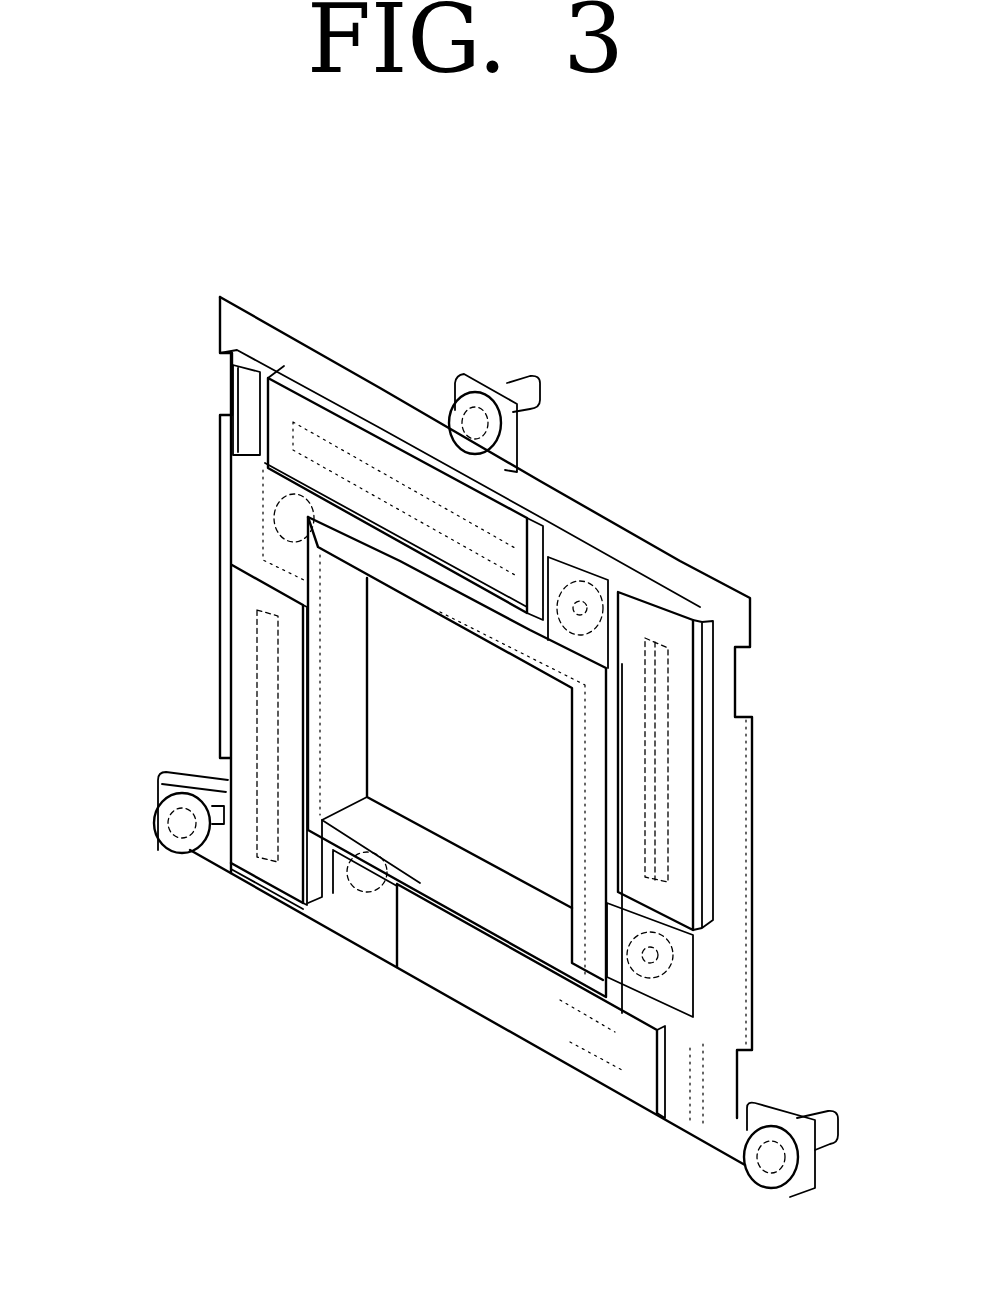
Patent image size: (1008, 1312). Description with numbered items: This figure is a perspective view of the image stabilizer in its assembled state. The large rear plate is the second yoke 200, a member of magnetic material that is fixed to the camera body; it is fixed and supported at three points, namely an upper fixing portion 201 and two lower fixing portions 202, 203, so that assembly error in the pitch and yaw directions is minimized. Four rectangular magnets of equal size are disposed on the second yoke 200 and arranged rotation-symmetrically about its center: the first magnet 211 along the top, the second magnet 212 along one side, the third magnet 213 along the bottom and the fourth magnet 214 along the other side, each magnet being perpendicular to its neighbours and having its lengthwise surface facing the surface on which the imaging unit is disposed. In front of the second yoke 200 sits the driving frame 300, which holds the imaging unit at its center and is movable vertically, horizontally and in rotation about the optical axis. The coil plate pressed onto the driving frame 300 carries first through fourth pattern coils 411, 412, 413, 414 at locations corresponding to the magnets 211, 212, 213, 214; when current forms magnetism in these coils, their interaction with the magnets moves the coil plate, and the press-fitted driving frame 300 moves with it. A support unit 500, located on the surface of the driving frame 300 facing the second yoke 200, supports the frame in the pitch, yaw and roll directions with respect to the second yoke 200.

The second yoke 200 is at (256, 334).
The upper fixing portion 201 is at (477, 393).
The lower fixing portion 202 is at (173, 840).
The lower fixing portion 203 is at (780, 1134).
The first magnet 211 is at (444, 442).
The second magnet 212 is at (751, 761).
The third magnet 213 is at (531, 1055).
The fourth magnet 214 is at (179, 726).
The driving frame 300 is at (468, 885).
The first pattern coil 411 is at (505, 533).
The second pattern coil 412 is at (680, 767).
The third pattern coil 413 is at (572, 1057).
The fourth pattern coil 414 is at (247, 677).
The support unit 500 is at (607, 583).